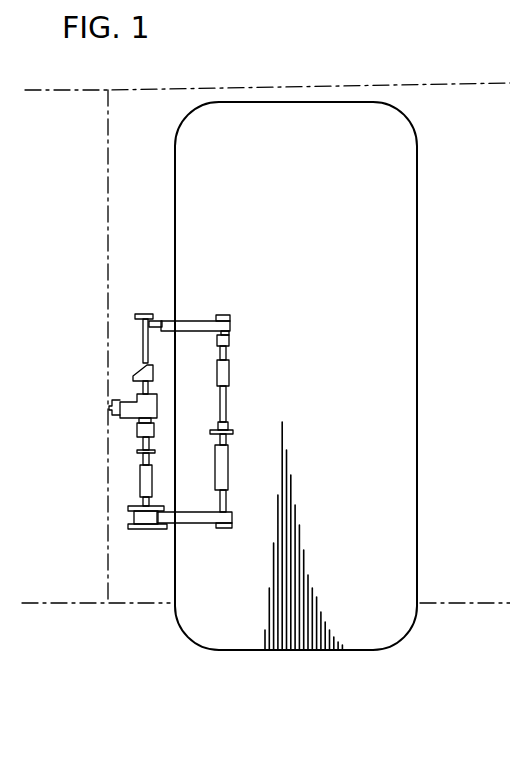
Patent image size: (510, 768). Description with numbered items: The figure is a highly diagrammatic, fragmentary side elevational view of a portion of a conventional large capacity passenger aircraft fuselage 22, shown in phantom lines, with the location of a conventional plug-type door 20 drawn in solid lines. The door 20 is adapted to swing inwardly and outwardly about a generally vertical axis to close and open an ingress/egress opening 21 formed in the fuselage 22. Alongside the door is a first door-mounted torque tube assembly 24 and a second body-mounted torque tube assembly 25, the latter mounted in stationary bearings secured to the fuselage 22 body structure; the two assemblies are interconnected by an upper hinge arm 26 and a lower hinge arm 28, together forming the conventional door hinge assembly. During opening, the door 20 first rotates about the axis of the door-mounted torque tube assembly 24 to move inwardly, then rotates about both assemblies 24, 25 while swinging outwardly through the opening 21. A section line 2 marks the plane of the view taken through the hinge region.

The section line 2- 2 is at (164, 297).
The plug-type door 20 is at (388, 238).
The ingress/egress opening 21 is at (418, 398).
The fuselage 22 is at (393, 83).
The door-mounted torque tube assembly 24 is at (235, 415).
The body-mounted torque tube assembly 25 is at (128, 459).
The upper hinge arm 26 is at (205, 322).
The lower hinge arm 28 is at (183, 523).